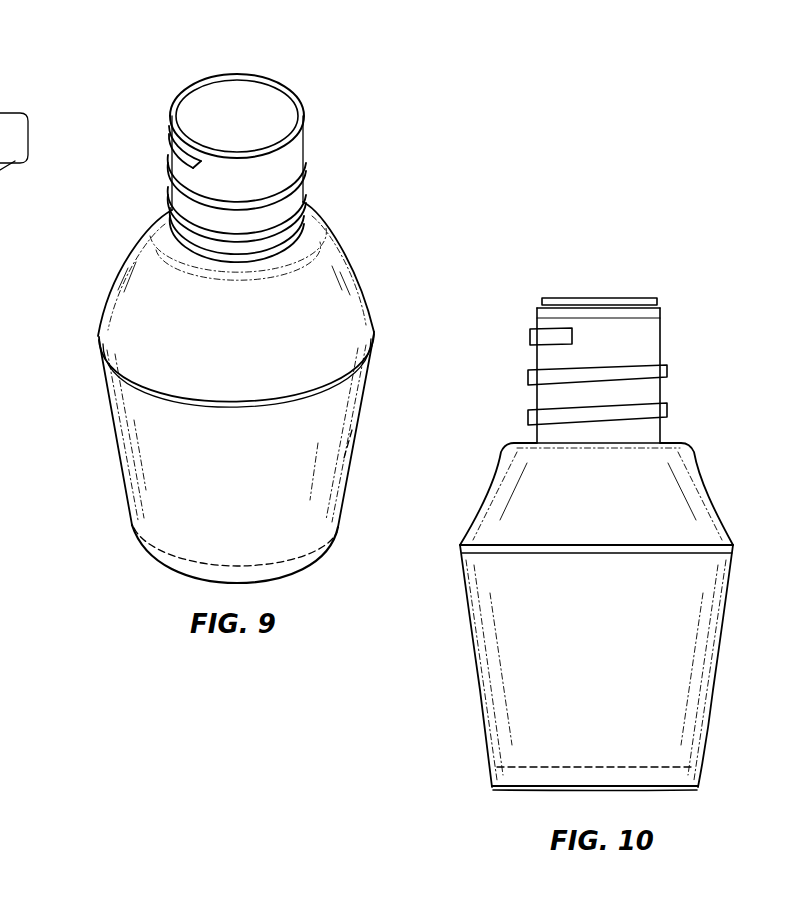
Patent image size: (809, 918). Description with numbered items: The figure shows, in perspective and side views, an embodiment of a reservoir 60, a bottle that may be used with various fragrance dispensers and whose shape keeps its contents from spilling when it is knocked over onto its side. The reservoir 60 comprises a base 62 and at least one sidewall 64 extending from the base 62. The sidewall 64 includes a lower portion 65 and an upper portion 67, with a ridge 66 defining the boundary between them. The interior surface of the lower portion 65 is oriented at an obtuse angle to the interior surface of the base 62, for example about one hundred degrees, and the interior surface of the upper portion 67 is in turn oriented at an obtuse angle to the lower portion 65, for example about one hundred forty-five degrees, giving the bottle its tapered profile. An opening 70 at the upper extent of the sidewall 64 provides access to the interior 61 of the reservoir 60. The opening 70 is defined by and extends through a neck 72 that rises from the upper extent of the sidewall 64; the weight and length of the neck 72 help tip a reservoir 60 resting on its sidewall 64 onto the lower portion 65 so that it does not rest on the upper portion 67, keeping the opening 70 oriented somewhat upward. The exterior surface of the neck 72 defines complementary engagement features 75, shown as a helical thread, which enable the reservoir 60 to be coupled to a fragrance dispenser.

In FIG. 9, the reservoir 60 is at (266, 322).
In FIG. 10, the reservoir 60 is at (607, 556).
In FIG. 9, the interior 61 is at (350, 432).
In FIG. 10, the interior 61 is at (540, 742).
In FIG. 9, the base 62 is at (326, 562).
In FIG. 10, the base 62 is at (695, 790).
In FIG. 9, the sidewall 64 is at (404, 326).
In FIG. 10, the sidewall 64 is at (737, 707).
In FIG. 9, the lower portion 65 is at (340, 520).
In FIG. 10, the lower portion 65 is at (708, 744).
In FIG. 9, the ridge 66 is at (373, 337).
In FIG. 10, the ridge 66 is at (714, 548).
In FIG. 9, the upper portion 67 is at (332, 262).
In FIG. 10, the upper portion 67 is at (702, 480).
In FIG. 9, the opening 70 is at (262, 104).
In FIG. 10, the opening 70 is at (598, 308).
In FIG. 9, the neck 72 is at (335, 190).
In FIG. 10, the neck 72 is at (690, 374).
In FIG. 9, the complementary engagement features 75 is at (312, 164).
In FIG. 10, the complementary engagement features 75 is at (537, 377).